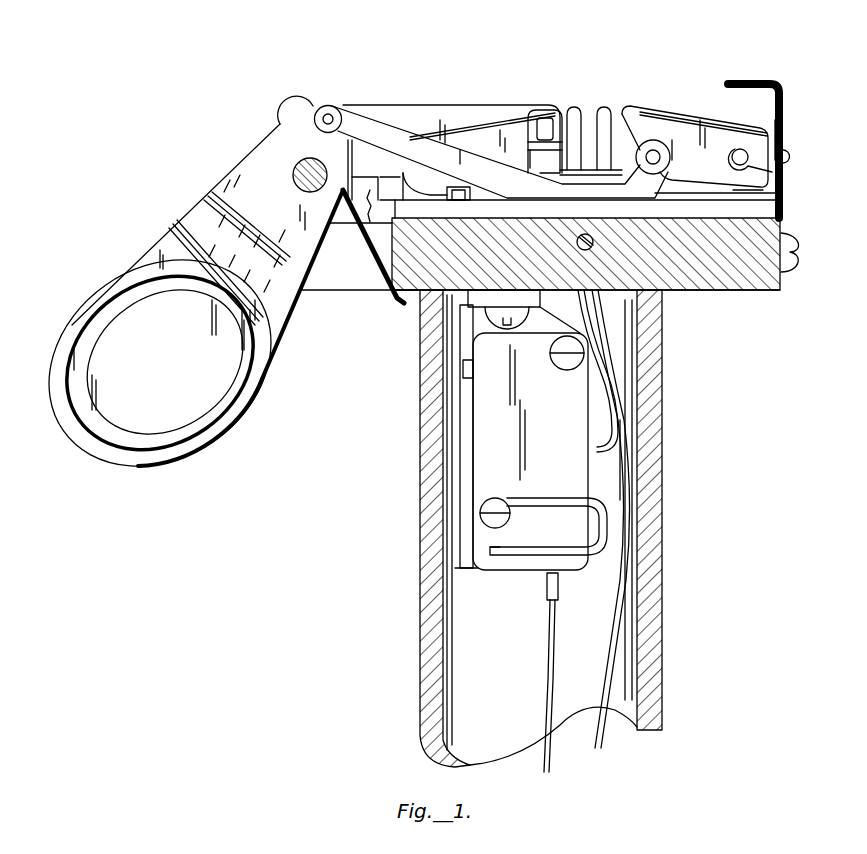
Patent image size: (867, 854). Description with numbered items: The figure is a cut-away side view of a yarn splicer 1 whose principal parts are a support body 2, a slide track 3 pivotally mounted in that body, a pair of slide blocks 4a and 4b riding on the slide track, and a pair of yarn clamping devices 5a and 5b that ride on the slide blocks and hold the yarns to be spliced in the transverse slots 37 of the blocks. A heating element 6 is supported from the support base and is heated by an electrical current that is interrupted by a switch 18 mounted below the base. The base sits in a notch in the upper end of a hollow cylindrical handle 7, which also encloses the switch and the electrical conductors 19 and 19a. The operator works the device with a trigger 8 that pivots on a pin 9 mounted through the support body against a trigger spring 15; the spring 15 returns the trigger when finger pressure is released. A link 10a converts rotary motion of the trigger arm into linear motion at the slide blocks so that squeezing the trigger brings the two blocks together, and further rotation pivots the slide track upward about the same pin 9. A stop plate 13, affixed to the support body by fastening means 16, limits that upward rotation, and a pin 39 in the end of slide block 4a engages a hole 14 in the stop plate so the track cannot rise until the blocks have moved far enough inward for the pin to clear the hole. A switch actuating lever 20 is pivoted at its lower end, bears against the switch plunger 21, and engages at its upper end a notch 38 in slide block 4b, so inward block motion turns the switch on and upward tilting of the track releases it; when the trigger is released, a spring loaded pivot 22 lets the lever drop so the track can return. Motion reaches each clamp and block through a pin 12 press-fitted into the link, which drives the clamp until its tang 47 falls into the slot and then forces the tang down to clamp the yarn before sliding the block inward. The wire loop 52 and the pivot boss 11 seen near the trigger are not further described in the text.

The splicer 1 is at (772, 42).
The support body 2 is at (734, 290).
The slide track 3 is at (770, 218).
The slide block 4a is at (760, 200).
The slide block 4b is at (447, 200).
The yarn clamping device 5a is at (692, 130).
The yarn clamping device 5b is at (490, 135).
The heating element 6 is at (552, 115).
The handle 7 is at (660, 382).
The trigger 8 is at (236, 414).
The pin 9 is at (280, 162).
The link 10a is at (385, 128).
The pivot pin 11 is at (325, 113).
The pin 12 is at (654, 150).
The stop plate 13 is at (773, 82).
The hole 14 is at (782, 136).
The trigger spring 15 is at (376, 282).
The fastening means 16 is at (793, 268).
The switch 18 is at (620, 475).
The electrical conductor 19 is at (551, 766).
The electrical conductor 19a is at (602, 746).
The switch actuating lever 20 is at (455, 435).
The switch plunger 21 is at (462, 370).
The spring loaded pivot 22 is at (500, 578).
The slot 37 is at (606, 125).
The notch 38 is at (463, 202).
The pin 39 is at (790, 158).
The tang 47 is at (732, 157).
The wire loop 52 is at (772, 172).